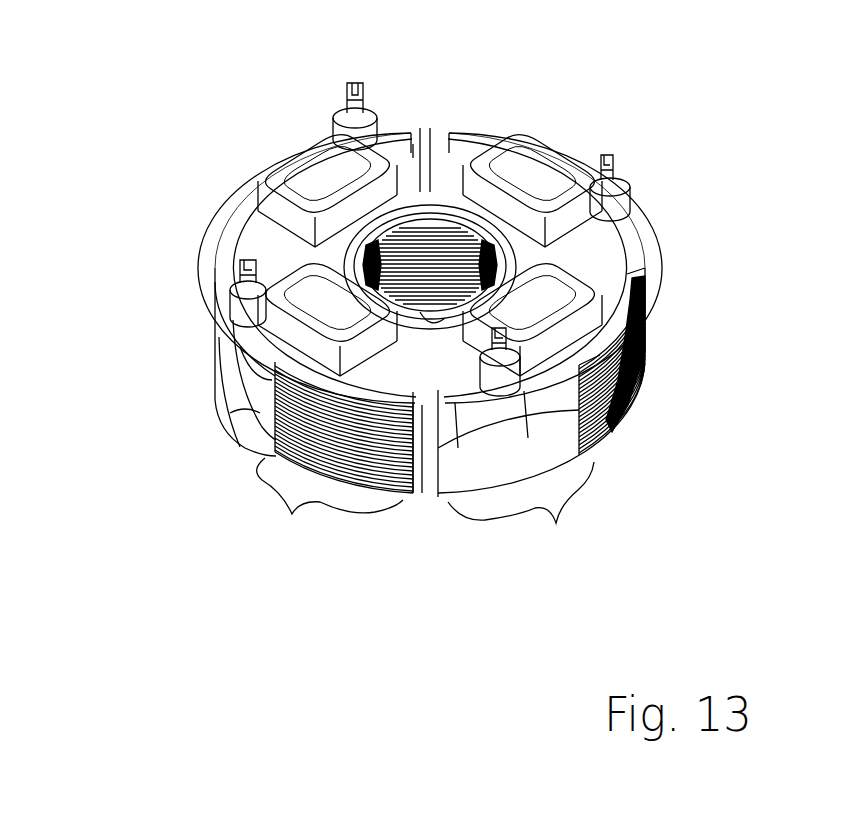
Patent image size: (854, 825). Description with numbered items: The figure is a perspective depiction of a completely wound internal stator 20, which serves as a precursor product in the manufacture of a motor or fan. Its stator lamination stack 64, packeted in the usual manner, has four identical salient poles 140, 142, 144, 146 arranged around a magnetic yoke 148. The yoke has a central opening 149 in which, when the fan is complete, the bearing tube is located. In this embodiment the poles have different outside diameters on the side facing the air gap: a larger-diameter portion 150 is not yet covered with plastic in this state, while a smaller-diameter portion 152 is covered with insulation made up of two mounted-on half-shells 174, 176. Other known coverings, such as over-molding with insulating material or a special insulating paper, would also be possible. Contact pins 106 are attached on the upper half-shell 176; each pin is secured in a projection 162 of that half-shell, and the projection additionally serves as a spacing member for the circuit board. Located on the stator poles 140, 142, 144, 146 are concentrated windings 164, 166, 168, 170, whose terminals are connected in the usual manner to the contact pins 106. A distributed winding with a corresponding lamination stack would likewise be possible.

The internal stator 20 is at (225, 160).
The stator lamination stack 64 is at (347, 553).
The contact pins 106 is at (352, 82).
The salient pole 140 is at (554, 148).
The salient pole 142 is at (648, 340).
The salient pole 144 is at (180, 385).
The salient pole 146 is at (311, 155).
The magnetic yoke 148 is at (441, 209).
The central opening 149 is at (458, 448).
The larger-diameter portion 150 is at (330, 502).
The smaller-diameter portion 152 is at (521, 509).
The projection 162 is at (218, 322).
The concentrated winding 164 is at (483, 150).
The concentrated winding 166 is at (640, 228).
The concentrated winding 168 is at (240, 352).
The concentrated winding 170 is at (285, 213).
The half-shell 174 is at (236, 455).
The upper half-shell 176 is at (238, 412).